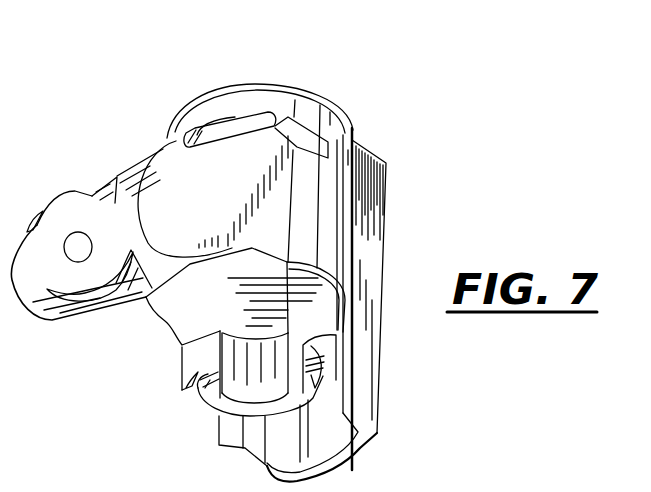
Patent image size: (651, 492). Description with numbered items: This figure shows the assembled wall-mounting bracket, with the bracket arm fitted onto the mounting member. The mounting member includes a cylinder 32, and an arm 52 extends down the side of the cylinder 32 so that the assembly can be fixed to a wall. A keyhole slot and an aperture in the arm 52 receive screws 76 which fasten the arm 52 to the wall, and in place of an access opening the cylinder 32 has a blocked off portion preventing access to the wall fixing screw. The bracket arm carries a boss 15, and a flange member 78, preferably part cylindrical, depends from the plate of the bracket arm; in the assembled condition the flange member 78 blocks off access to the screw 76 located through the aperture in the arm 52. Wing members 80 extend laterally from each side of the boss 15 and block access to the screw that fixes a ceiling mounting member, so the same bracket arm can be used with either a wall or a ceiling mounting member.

The boss 15 is at (56, 205).
The cylinder 32 is at (272, 93).
The arm 52 is at (367, 237).
The screw 76 is at (320, 373).
The flange member 78 is at (190, 385).
The wing member 80 is at (210, 128).